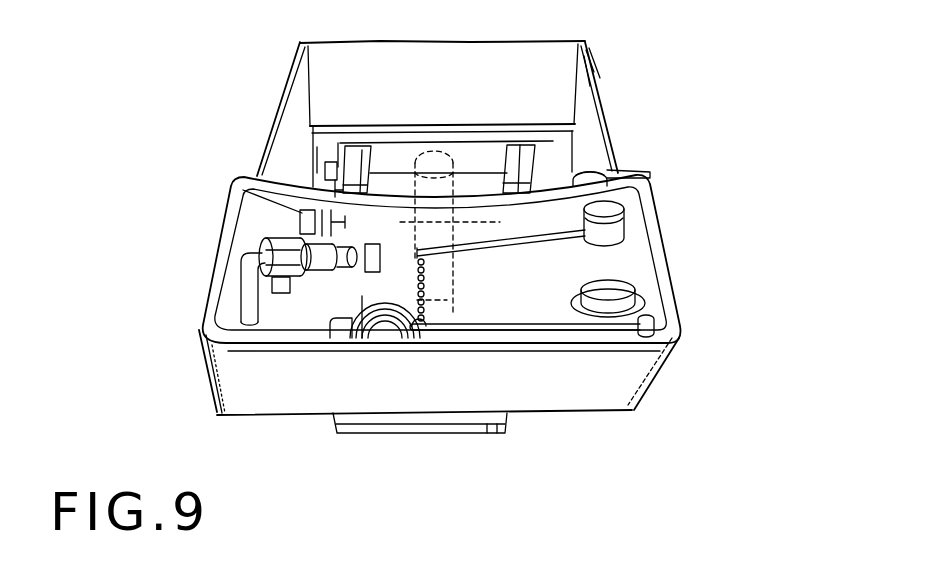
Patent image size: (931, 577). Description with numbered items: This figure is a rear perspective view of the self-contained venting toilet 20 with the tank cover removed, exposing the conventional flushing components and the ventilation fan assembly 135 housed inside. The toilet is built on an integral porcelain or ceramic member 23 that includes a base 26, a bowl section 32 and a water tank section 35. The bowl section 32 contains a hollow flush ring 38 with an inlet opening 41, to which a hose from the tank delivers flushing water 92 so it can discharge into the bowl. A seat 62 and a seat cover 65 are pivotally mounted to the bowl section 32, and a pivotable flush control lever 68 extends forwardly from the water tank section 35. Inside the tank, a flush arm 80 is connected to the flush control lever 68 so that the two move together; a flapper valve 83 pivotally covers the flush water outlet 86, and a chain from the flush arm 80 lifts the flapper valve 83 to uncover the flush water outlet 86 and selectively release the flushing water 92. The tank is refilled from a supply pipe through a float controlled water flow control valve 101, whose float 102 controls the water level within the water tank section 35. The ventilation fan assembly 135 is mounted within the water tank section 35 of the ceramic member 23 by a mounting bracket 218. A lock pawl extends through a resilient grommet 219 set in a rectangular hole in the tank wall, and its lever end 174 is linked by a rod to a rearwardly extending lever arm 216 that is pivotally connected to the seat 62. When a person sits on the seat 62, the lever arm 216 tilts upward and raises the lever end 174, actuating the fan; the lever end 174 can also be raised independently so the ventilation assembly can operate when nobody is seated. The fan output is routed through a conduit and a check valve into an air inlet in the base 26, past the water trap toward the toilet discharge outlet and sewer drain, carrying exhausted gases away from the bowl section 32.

The self-contained venting toilet 20 is at (650, 38).
The integral porcelain or ceramic member 23 is at (680, 196).
The base 26 is at (472, 437).
The bowl section 32 is at (613, 140).
The water tank section 35 is at (648, 380).
The hollow flush ring 38 is at (280, 91).
The inlet opening 41 is at (440, 150).
The seat 62 is at (578, 97).
The seat cover 65 is at (462, 89).
The pivotable flush control lever 68 is at (650, 173).
The flush arm 80 is at (484, 243).
The flapper valve 83 is at (451, 312).
The flush water outlet 86 is at (455, 268).
The flushing water 92 is at (227, 312).
The float controlled water flow control valve 101 is at (684, 275).
The float 102 is at (348, 327).
The ventilation fan assembly 135 is at (230, 233).
The lever end 174 is at (262, 190).
The lever arm 216 is at (333, 187).
The mounting bracket 218 is at (300, 228).
The resilient grommet 219 is at (340, 222).